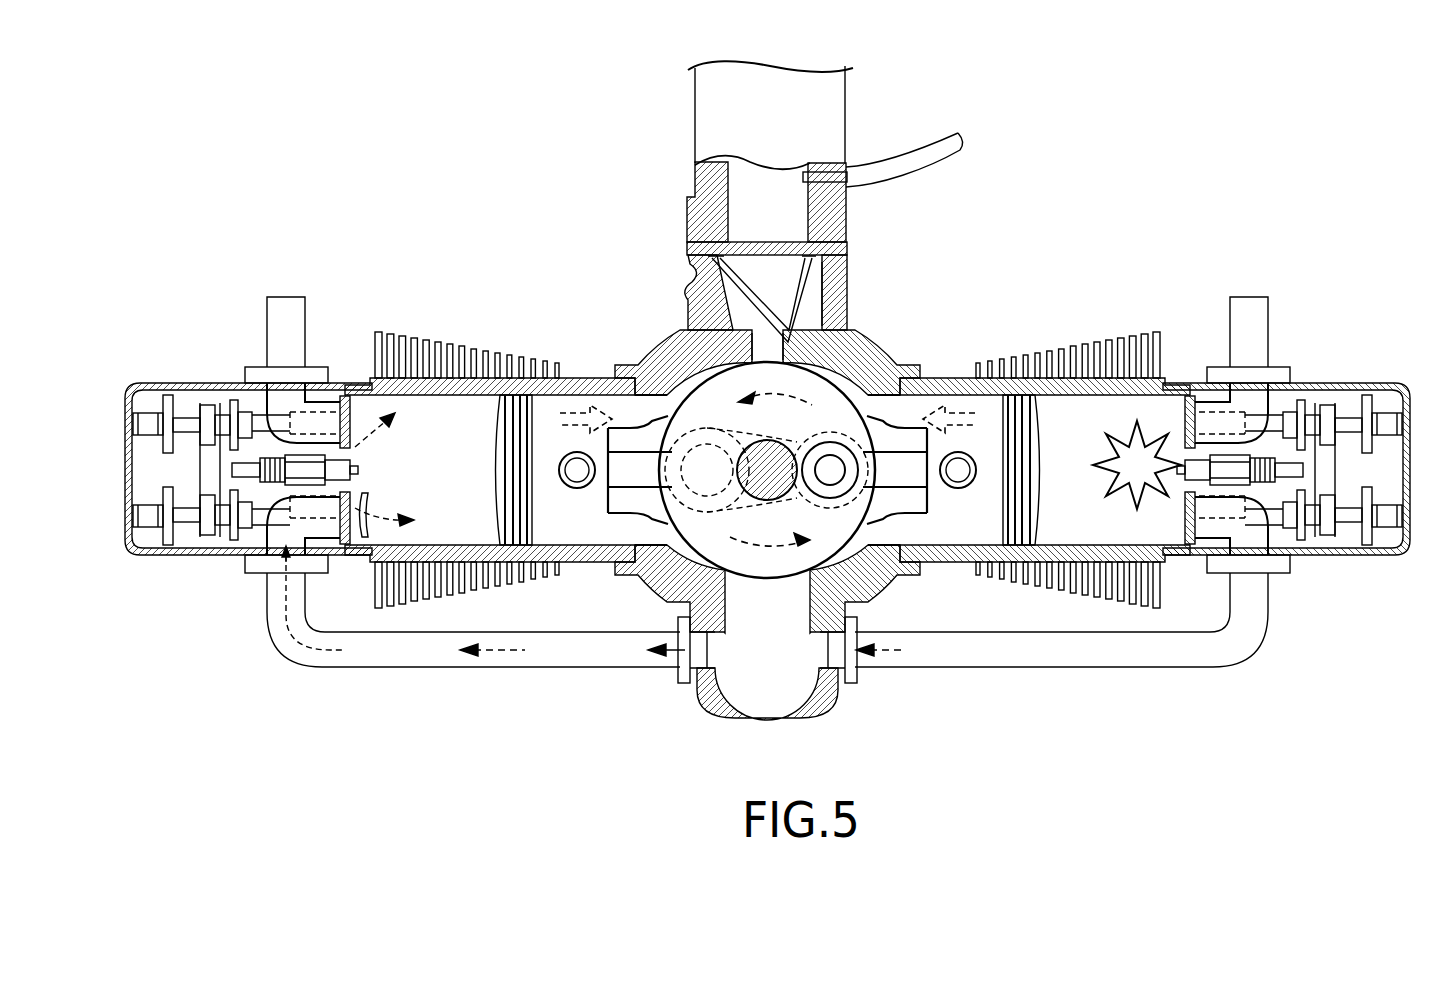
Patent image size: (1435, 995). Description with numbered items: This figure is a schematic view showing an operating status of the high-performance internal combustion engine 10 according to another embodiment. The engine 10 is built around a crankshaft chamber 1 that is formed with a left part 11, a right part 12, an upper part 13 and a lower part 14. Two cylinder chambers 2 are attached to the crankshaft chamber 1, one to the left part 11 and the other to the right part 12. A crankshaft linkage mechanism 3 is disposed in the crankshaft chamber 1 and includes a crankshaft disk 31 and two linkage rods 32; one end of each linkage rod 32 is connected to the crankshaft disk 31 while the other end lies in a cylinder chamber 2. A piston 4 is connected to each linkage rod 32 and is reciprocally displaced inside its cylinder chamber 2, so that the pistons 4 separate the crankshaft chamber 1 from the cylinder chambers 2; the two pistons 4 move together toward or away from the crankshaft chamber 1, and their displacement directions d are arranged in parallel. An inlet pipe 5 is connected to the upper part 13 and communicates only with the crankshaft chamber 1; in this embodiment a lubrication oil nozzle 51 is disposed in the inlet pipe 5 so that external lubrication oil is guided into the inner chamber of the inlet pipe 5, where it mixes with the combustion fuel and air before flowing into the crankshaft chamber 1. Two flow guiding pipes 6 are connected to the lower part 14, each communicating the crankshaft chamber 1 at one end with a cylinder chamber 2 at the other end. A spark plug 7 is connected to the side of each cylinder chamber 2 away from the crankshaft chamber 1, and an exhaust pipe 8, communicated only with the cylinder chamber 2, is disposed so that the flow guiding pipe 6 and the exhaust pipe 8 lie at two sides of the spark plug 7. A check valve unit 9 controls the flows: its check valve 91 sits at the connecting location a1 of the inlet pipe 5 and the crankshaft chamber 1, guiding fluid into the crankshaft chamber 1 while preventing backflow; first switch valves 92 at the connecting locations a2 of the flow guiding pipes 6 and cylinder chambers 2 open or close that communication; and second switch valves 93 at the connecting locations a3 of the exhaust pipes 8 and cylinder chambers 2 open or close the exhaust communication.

The high-performance internal combustion engine 10 is at (506, 157).
The crankshaft chamber 1 is at (880, 328).
The left part 11 is at (660, 367).
The right part 12 is at (890, 347).
The upper part 13 is at (845, 327).
The lower part 14 is at (818, 700).
The cylinder chamber 2 is at (580, 384).
The crankshaft linkage mechanism 3 is at (535, 724).
The crankshaft disk 31 is at (702, 537).
The linkage rod 32 is at (632, 475).
The piston 4 is at (550, 523).
The inlet pipe 5 is at (715, 183).
The lubrication oil nozzle 51 is at (912, 163).
The flow guiding pipe 6 is at (370, 657).
The spark plug 7 is at (232, 468).
The exhaust pipe 8 is at (278, 318).
The check valve unit 9 is at (735, 302).
The check valve 91 is at (723, 283).
The first switch valve 92 is at (247, 540).
The second switch valve 93 is at (252, 418).
The connecting location a1 is at (846, 274).
The connecting location a2 is at (323, 545).
The connecting location a3 is at (318, 397).
The displacement direction d is at (766, 419).